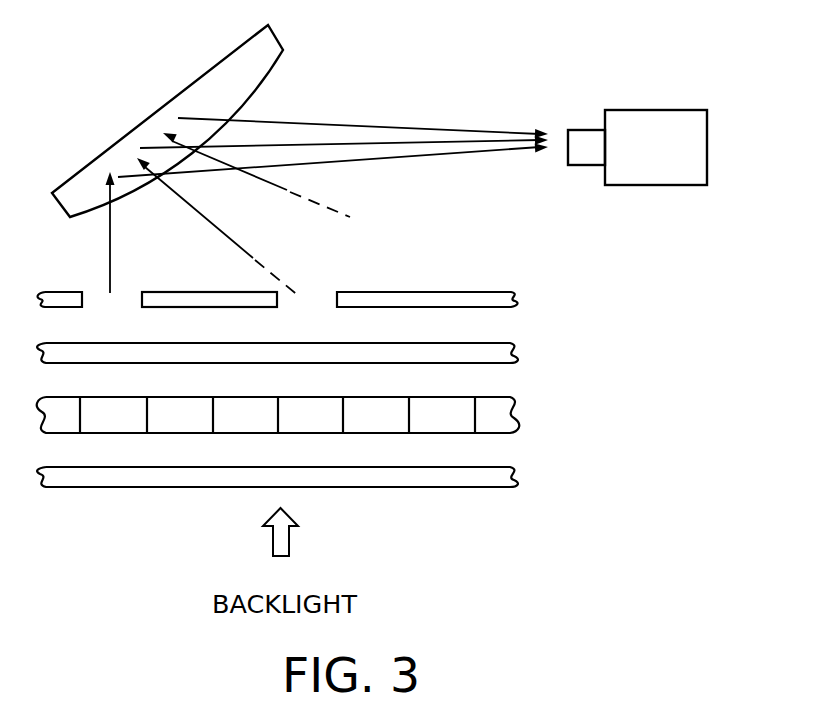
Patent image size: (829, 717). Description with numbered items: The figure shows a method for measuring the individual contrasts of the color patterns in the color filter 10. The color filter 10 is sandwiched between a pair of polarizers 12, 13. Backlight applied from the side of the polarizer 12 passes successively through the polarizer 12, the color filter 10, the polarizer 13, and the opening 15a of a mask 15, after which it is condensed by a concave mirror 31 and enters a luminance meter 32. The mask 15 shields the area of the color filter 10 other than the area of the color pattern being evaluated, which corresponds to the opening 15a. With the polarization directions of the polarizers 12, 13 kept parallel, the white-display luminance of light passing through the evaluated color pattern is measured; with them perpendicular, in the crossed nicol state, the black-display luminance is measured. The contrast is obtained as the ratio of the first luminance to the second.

The concave mirror 31 is at (198, 80).
The luminance meter 32 is at (707, 147).
The mask 15 is at (433, 292).
The opening 15a is at (120, 302).
The polarizer 13 is at (522, 352).
The color filter 10 is at (521, 413).
The polarizer 12 is at (521, 478).